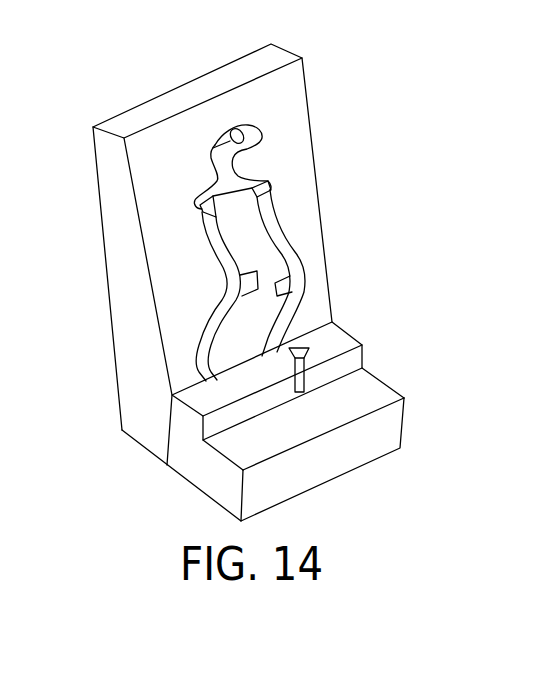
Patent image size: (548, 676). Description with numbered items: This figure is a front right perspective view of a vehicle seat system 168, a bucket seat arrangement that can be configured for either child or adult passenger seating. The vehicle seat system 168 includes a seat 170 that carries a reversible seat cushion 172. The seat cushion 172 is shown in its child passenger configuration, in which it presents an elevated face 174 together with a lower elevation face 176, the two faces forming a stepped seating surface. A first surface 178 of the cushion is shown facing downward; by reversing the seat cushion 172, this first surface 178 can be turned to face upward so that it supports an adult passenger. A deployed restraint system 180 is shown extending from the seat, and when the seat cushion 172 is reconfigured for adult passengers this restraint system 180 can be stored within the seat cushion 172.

The vehicle seat system 168 is at (412, 223).
The seat 170 is at (288, 123).
The reversible seat cushion 172 is at (317, 378).
The elevated face 174 is at (210, 399).
The lower elevation face 176 is at (366, 395).
The first surface 178 is at (327, 446).
The deployed restraint system 180 is at (290, 201).